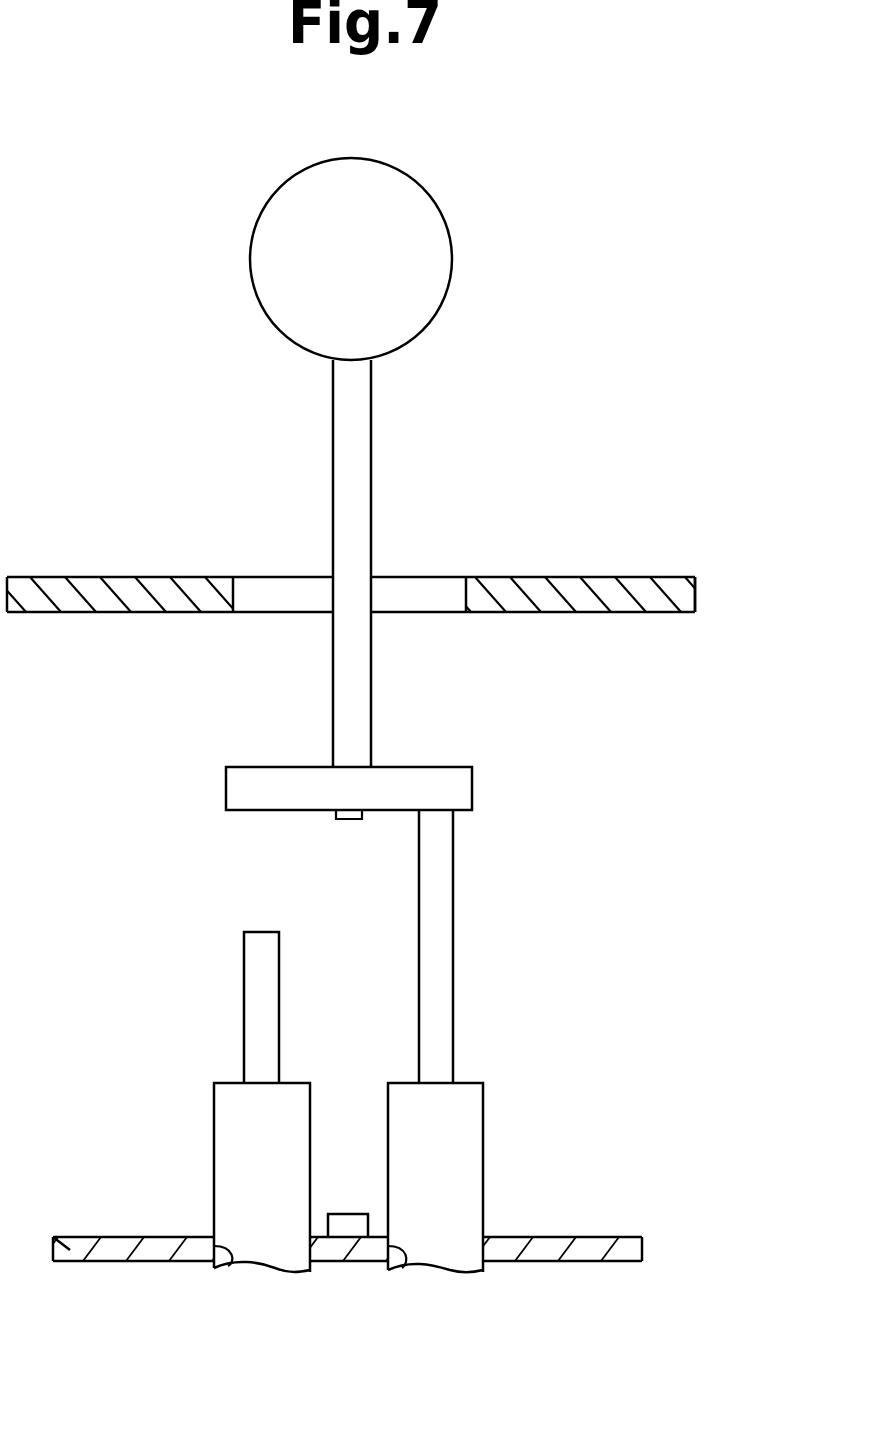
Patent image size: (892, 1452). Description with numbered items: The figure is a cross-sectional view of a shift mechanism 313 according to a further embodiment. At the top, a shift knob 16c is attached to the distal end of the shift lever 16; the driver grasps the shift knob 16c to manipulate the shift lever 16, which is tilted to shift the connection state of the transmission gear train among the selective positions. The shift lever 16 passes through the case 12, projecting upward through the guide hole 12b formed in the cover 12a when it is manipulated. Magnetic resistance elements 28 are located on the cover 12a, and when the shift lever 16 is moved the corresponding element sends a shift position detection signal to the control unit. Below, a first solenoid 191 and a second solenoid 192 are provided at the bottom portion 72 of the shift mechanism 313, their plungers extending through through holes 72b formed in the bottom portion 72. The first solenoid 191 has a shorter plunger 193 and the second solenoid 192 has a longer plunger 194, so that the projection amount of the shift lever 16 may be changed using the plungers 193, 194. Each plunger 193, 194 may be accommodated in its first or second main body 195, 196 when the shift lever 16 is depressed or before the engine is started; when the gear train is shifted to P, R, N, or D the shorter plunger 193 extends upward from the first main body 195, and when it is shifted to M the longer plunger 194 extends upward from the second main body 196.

The shift mechanism 313 is at (686, 138).
The shift knob 16c is at (449, 256).
The shift lever 16 is at (364, 422).
The case 12 is at (638, 577).
The guide hole 12b is at (233, 577).
The cover 12a is at (697, 594).
The plunger 194 is at (453, 922).
The plunger 193 is at (252, 953).
The first main body 195 is at (222, 1122).
The second main body 196 is at (478, 1122).
The first solenoid 191 is at (272, 1260).
The second solenoid 192 is at (447, 1258).
The bottom portion 72 is at (592, 1262).
The through hole 72b is at (227, 1268).
The magnetic resistance element 28 is at (349, 1212).